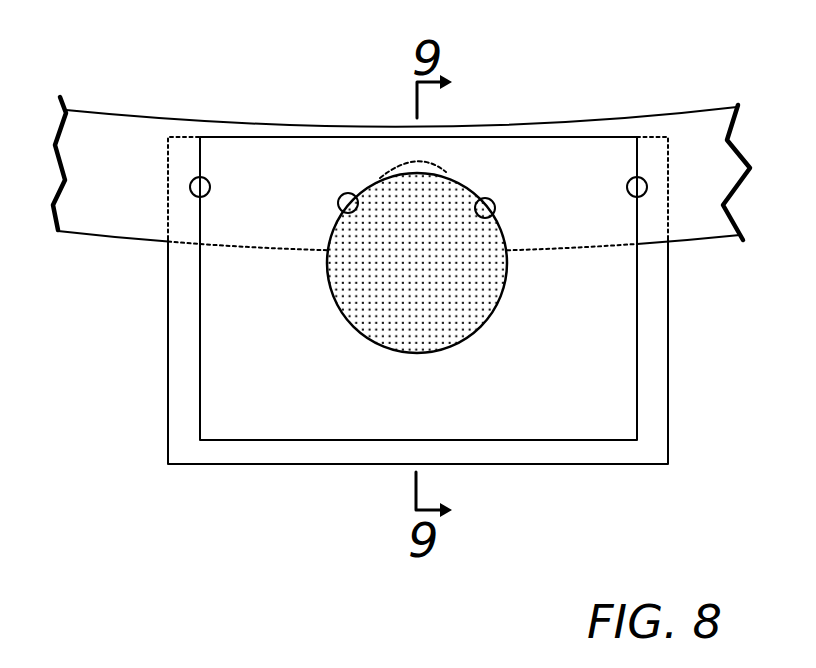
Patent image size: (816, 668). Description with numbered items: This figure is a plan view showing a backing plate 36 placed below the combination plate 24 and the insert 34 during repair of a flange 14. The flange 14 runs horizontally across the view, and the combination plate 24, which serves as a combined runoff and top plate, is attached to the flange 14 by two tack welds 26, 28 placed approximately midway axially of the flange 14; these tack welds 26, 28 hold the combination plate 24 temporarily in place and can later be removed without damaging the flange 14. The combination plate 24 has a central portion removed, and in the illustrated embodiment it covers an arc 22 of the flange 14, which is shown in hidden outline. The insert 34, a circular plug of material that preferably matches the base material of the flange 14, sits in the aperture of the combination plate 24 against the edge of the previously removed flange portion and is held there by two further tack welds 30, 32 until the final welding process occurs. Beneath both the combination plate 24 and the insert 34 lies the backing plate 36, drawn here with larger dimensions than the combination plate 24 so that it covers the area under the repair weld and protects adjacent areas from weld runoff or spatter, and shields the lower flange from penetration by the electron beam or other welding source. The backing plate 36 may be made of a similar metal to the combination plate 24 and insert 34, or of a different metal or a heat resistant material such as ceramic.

The flange 14 is at (118, 203).
The arc 22 is at (402, 170).
The combination plate 24 is at (355, 420).
The tack weld 26 is at (637, 187).
The tack weld 28 is at (197, 190).
The tack weld 30 is at (485, 208).
The tack weld 32 is at (347, 203).
The insert 34 is at (328, 280).
The backing plate 36 is at (655, 407).